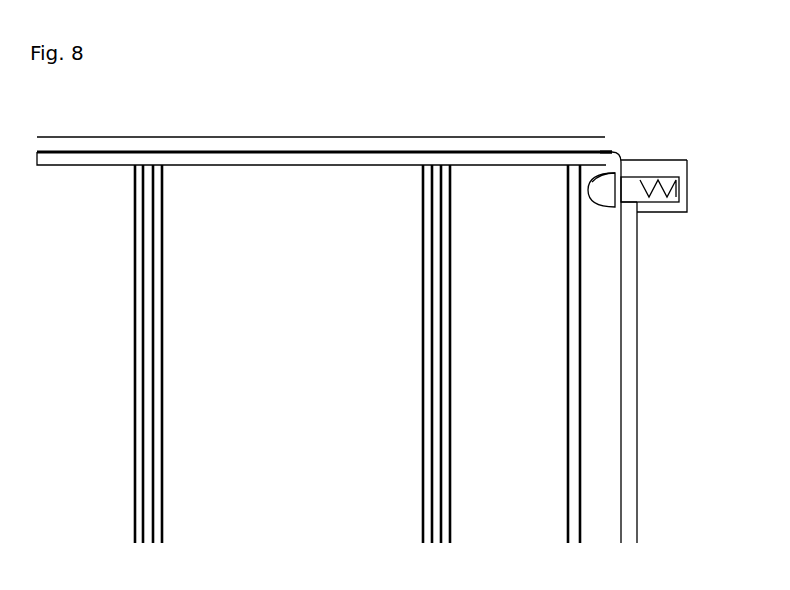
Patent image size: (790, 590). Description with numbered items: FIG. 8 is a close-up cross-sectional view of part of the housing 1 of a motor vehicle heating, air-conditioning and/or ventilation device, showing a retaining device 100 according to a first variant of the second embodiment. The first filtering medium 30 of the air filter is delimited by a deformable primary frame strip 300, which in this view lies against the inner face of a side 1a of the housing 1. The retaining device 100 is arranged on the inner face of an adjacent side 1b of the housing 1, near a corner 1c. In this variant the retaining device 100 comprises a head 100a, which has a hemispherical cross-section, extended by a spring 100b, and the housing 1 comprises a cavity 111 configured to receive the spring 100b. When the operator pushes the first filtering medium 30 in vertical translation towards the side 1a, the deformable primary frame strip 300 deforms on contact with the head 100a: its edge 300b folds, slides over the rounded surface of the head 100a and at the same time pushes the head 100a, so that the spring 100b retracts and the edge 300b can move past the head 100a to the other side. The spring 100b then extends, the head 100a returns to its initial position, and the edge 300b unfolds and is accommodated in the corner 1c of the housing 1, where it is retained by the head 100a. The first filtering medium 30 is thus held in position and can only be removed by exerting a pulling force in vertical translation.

The housing 1 is at (634, 328).
The side of the housing 1a is at (172, 137).
The side of the housing 1b is at (623, 376).
The corner of the housing 1c is at (618, 152).
The first filtering medium 30 is at (547, 470).
The primary frame strip 300 is at (256, 161).
The edge of the deformable primary frame strip 300b is at (606, 153).
The retaining device 100 is at (518, 175).
The head 100a is at (600, 190).
The spring 100b is at (636, 203).
The cavity 111 is at (687, 212).